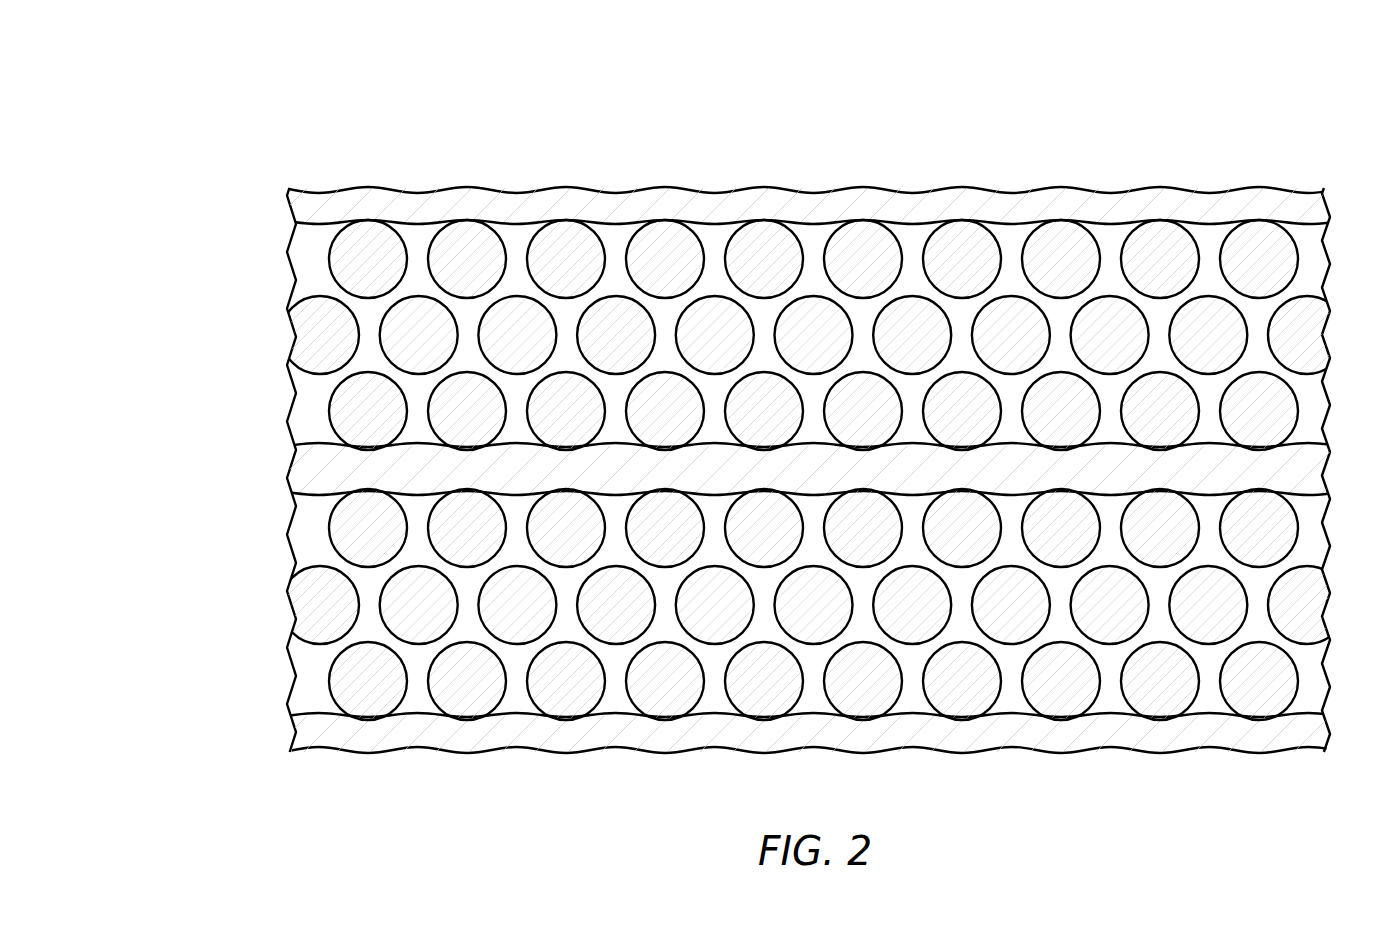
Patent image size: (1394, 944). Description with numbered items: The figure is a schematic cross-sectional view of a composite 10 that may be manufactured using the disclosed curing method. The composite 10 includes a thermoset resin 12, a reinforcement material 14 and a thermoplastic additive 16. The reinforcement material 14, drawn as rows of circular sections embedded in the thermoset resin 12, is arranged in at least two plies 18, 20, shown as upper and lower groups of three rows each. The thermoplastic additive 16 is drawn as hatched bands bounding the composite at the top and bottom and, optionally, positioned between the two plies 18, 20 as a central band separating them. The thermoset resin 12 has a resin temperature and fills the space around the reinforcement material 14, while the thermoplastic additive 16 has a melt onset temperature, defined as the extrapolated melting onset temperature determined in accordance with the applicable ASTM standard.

The composite 10 is at (1100, 126).
The thermoset resin 12 is at (306, 416).
The reinforcement material 14 is at (762, 228).
The thermoplastic additive 16 is at (916, 206).
The ply 18 is at (243, 218).
The ply 20 is at (243, 488).